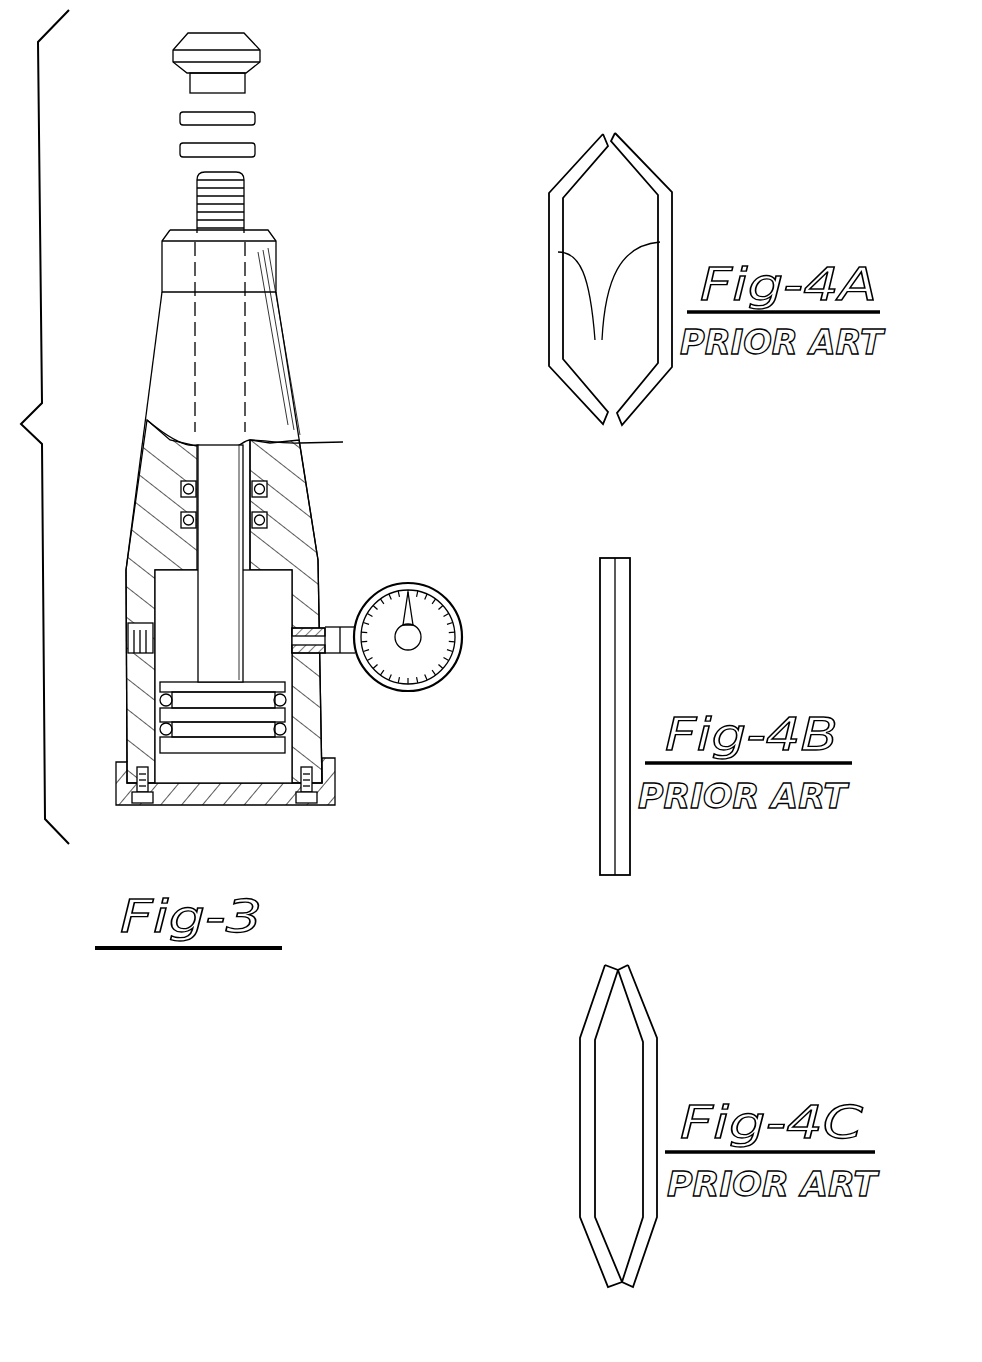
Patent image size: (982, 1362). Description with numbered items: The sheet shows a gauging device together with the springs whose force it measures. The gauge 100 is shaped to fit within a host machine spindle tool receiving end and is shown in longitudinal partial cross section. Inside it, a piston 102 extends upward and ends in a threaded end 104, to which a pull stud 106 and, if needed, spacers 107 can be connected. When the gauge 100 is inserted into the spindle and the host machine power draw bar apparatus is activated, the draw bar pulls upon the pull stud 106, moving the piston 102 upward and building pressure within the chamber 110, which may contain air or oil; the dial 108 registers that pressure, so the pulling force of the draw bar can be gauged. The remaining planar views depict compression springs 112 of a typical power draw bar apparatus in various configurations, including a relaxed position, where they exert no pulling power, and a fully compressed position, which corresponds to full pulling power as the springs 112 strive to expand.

In FIG. 3, the gauge 100 is at (318, 334).
In FIG. 3, the piston 102 is at (230, 465).
In FIG. 3, the threaded end 104 is at (244, 201).
In FIG. 3, the pull stud 106 is at (262, 42).
In FIG. 3, the spacers 107 is at (256, 118).
In FIG. 3, the dial 108 is at (445, 590).
In FIG. 3, the chamber 110 is at (273, 601).
In FIG. 4A, the compression springs 112 is at (610, 279).
In FIG. 4B, the compression springs 112 is at (613, 558).
In FIG. 4C, the compression springs 112 is at (652, 1125).